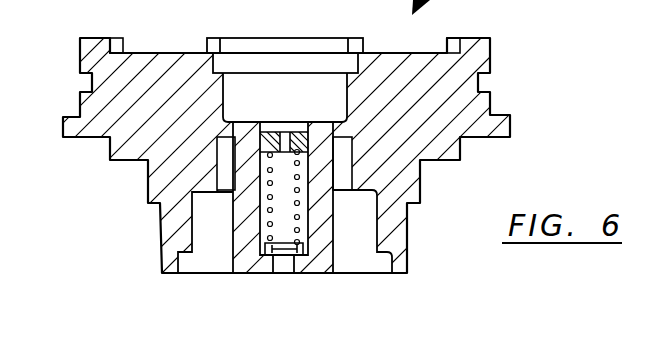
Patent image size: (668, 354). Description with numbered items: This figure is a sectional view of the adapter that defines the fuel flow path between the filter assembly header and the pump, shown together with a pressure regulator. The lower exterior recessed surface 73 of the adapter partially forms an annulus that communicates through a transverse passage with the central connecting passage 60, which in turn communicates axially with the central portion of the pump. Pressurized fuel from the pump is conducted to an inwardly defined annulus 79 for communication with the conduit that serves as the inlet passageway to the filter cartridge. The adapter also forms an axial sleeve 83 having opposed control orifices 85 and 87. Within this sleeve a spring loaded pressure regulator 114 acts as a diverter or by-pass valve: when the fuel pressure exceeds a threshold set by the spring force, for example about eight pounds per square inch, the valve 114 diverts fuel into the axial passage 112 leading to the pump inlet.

The central connecting passage 60 is at (343, 100).
The lower exterior recessed surface 73 is at (326, 168).
The inwardly defined annulus 79 is at (197, 237).
The axial sleeve 83 is at (250, 240).
The control orifice 85 is at (290, 273).
The control orifice 87 is at (283, 133).
The axial passage 112 is at (308, 206).
The spring loaded pressure regulator 114 is at (282, 222).